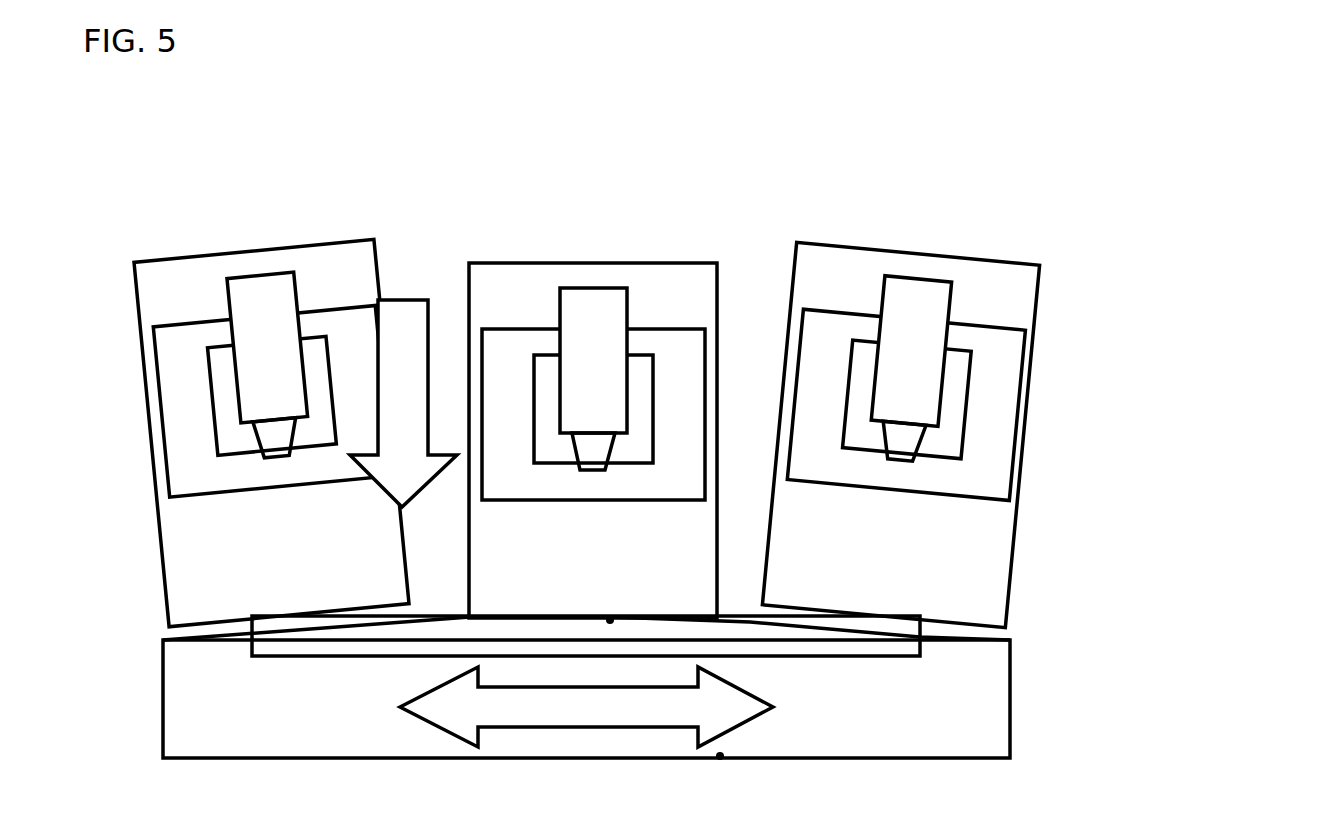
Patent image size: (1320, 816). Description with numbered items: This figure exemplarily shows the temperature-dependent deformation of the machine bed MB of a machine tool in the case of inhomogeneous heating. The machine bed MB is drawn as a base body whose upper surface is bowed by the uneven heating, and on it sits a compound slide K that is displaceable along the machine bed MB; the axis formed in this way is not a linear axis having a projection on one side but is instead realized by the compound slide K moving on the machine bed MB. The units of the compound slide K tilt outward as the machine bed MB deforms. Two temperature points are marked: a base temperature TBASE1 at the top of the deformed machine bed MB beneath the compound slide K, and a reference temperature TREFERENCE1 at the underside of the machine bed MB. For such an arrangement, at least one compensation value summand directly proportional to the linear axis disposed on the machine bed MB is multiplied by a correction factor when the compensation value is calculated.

The compound slide K is at (983, 572).
The machine bed MB is at (983, 717).
The base temperature measuring point 1 TBASE1 is at (610, 620).
The reference temperature measuring point 1 TREFERENCE1 is at (720, 756).